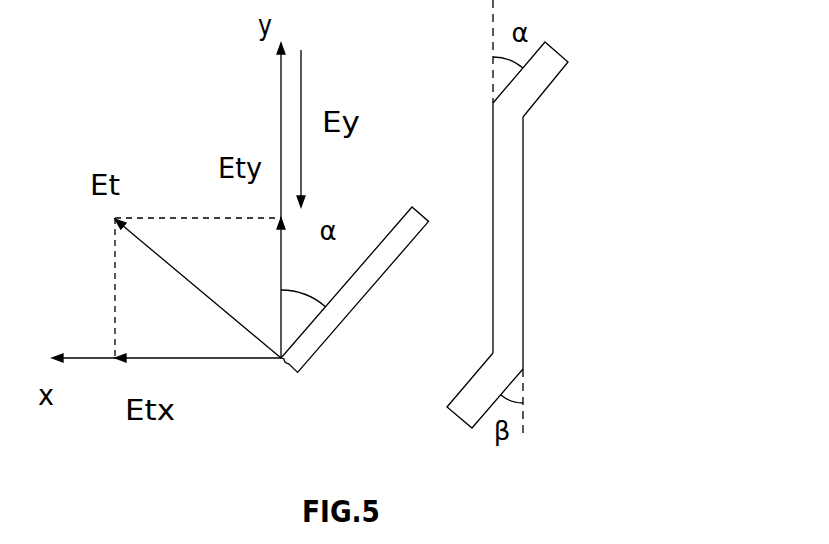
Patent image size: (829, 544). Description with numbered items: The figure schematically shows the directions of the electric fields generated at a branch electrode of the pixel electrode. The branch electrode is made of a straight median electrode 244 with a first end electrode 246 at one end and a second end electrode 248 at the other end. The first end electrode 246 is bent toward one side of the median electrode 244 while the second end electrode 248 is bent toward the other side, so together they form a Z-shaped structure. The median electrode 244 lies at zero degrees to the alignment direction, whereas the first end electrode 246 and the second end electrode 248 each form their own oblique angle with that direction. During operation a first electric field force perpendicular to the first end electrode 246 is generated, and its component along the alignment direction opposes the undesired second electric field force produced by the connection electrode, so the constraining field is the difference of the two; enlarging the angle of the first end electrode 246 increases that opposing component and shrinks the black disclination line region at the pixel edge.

The median electrode 244 is at (517, 217).
The first end electrode 246 is at (360, 280).
The second end electrode 248 is at (478, 399).